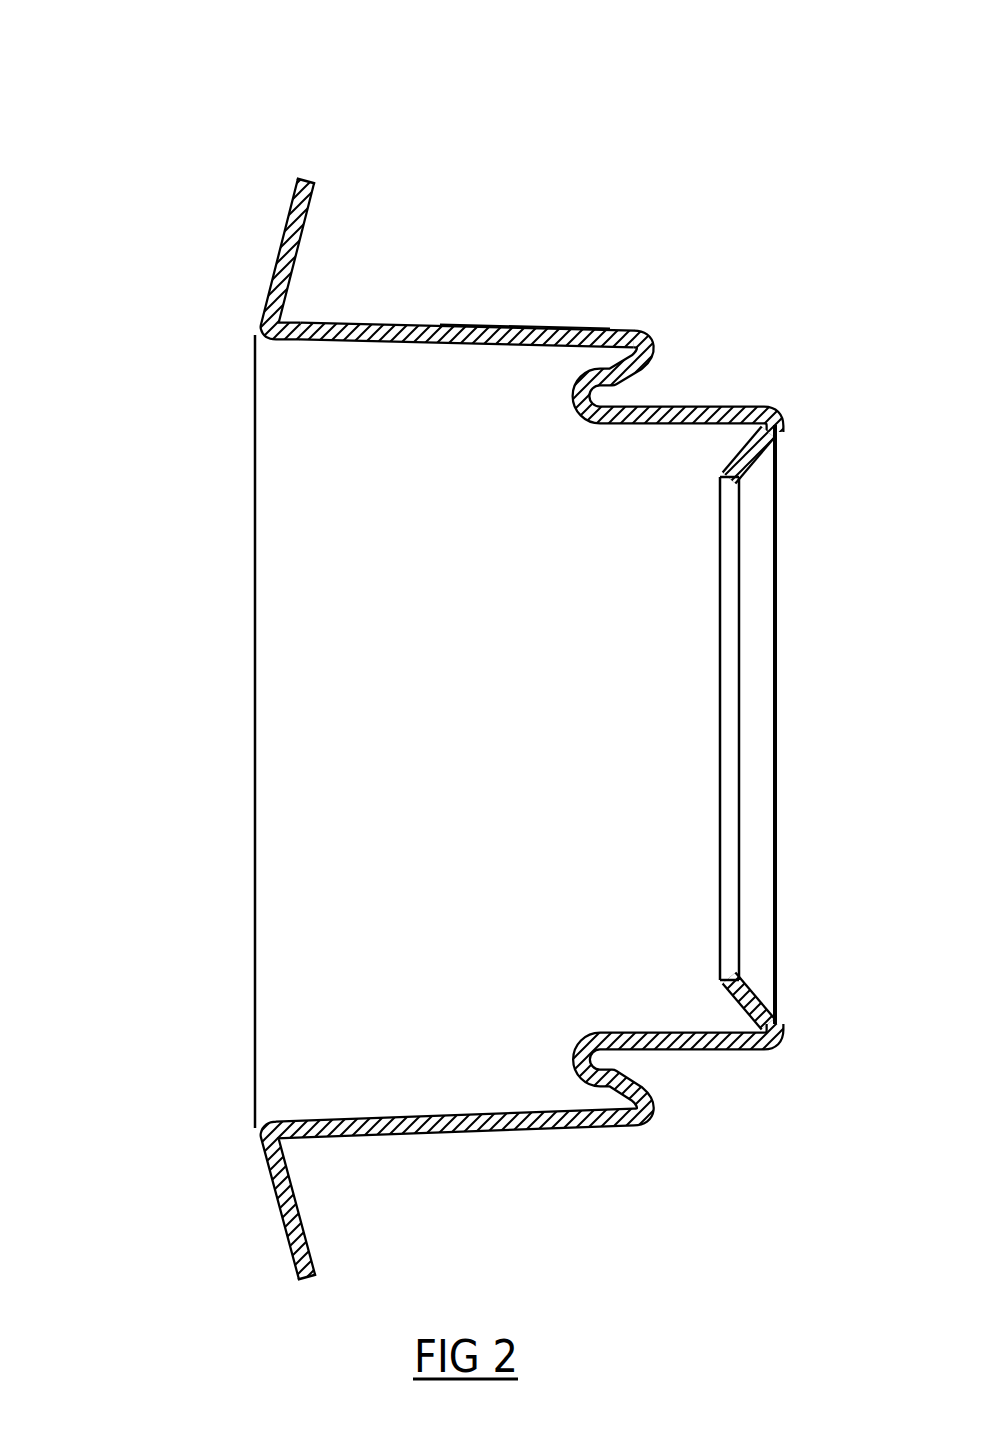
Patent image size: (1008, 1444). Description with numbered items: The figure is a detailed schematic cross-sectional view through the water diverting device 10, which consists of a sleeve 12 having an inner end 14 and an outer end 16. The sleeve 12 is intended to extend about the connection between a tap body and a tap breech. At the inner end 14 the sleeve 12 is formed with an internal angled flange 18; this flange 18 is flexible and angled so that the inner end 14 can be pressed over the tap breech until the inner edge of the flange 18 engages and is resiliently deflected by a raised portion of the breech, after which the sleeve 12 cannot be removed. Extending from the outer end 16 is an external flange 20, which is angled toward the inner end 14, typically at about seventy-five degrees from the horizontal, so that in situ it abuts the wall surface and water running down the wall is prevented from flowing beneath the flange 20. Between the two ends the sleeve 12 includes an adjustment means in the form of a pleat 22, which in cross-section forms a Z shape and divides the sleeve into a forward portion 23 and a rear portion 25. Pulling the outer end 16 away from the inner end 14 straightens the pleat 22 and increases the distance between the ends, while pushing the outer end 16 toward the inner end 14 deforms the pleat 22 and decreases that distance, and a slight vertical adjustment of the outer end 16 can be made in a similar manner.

The water diverting device 10 is at (495, 198).
The sleeve 12 is at (400, 322).
The inner end 14 is at (778, 730).
The outer end 16 is at (230, 732).
The internal angled flange 18 is at (757, 455).
The external flange 20 is at (280, 232).
The pleat 22 is at (650, 345).
The forward portion 23 is at (527, 330).
The rear portion 25 is at (749, 408).